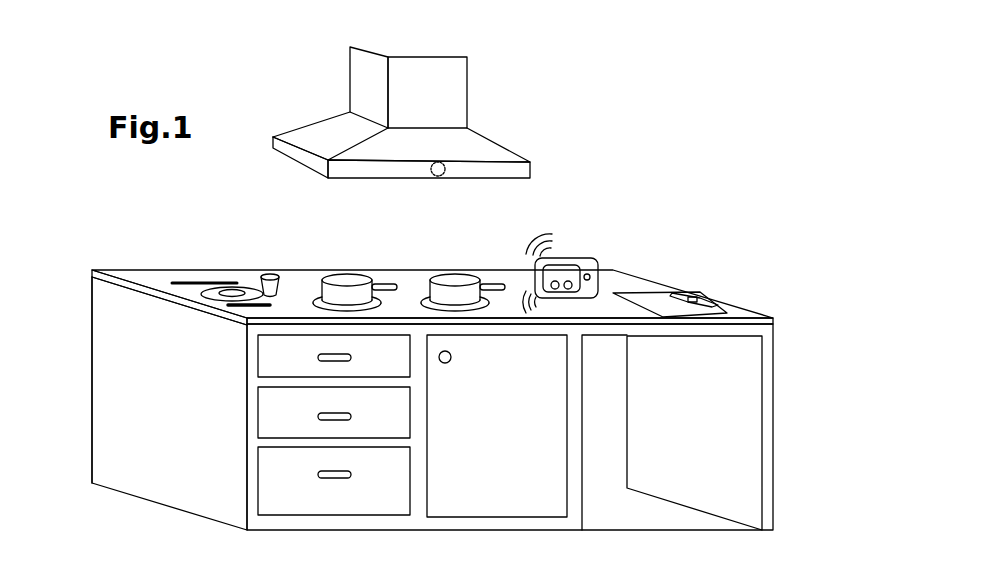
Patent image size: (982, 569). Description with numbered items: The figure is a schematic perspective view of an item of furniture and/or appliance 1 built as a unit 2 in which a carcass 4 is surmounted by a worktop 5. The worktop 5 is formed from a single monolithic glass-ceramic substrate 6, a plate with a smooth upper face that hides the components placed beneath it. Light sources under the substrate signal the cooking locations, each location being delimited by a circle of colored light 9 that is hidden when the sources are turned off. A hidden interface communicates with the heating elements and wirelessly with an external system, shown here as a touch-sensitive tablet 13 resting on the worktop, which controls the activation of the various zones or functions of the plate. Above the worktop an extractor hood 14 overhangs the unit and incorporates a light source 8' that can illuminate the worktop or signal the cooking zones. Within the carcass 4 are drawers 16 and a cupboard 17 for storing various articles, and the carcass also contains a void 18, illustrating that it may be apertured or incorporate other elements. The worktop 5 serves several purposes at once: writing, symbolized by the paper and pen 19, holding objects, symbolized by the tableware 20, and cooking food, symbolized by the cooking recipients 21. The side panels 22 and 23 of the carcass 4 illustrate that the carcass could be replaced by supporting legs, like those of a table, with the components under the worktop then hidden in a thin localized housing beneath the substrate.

The item of furniture and/or appliance 1 is at (695, 208).
The unit 2 is at (133, 260).
The carcass 4 is at (108, 338).
The worktop 5 is at (625, 278).
The monolithic glass-ceramic substrate 6 is at (762, 317).
The light source 8' is at (475, 137).
The circle of colored light 9 is at (320, 302).
The touch-sensitive tablet 13 is at (583, 262).
The extractor hood 14 is at (453, 90).
The drawers 16 is at (270, 492).
The cupboards 17 is at (550, 485).
The void 18 is at (590, 414).
The paper and pen 19 is at (697, 295).
The tableware 20 is at (264, 278).
The cooking recipients 21 is at (448, 280).
The panel 22 is at (775, 407).
The panel 23 is at (98, 437).